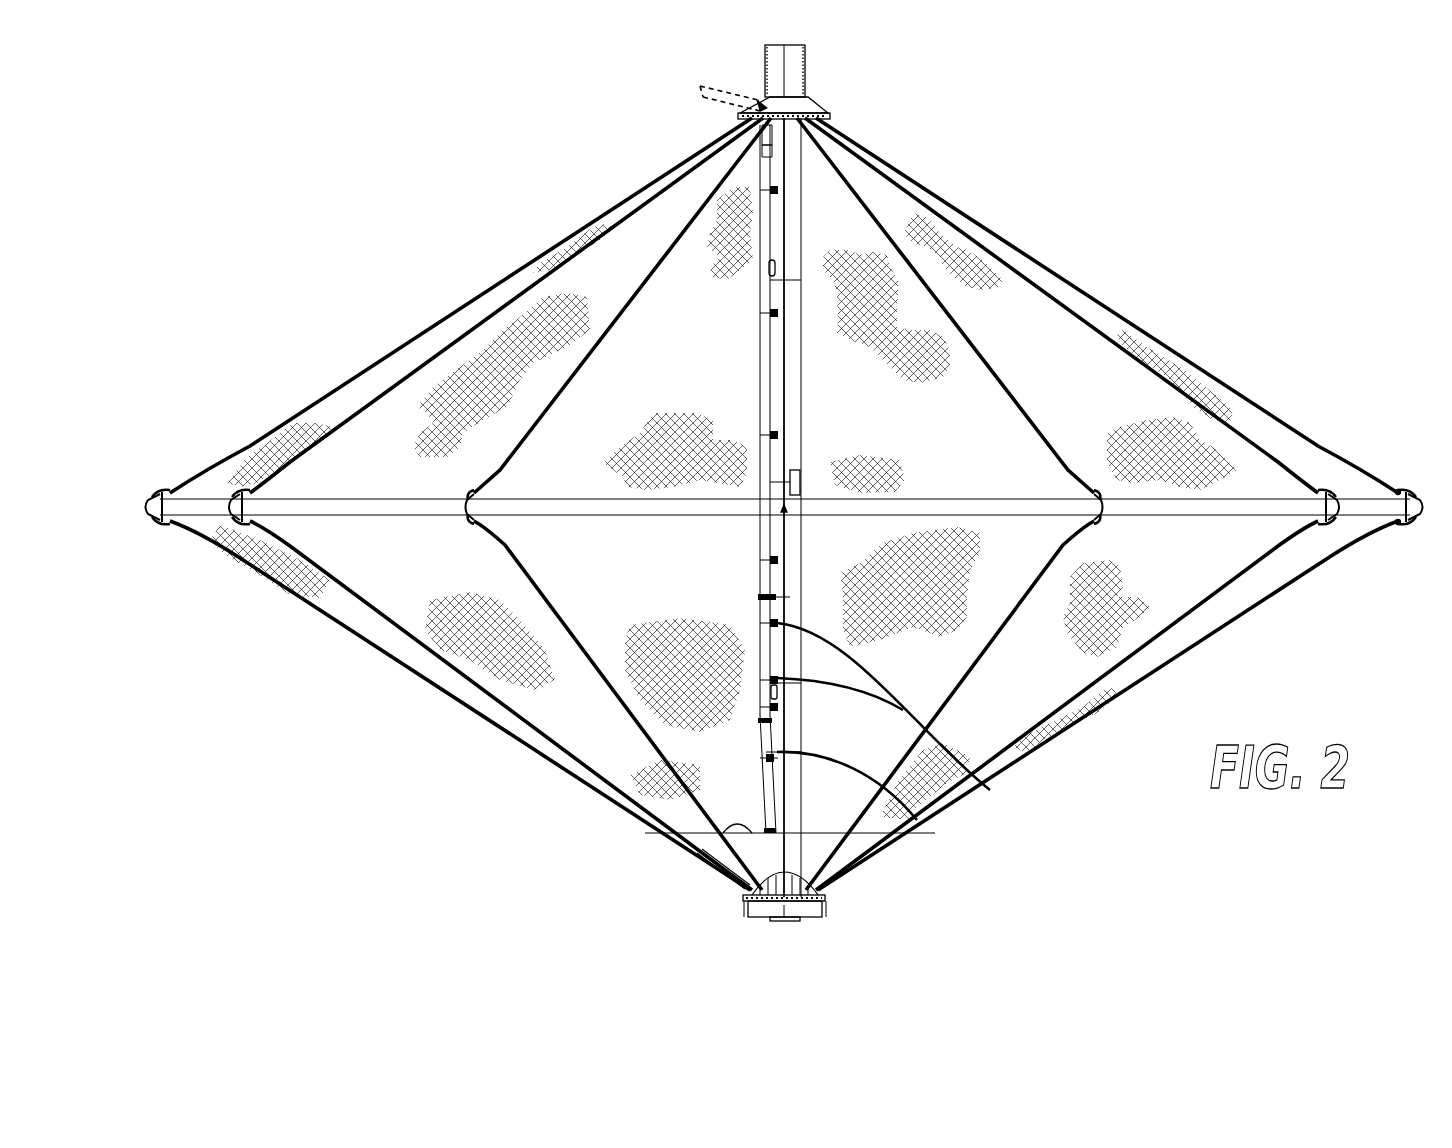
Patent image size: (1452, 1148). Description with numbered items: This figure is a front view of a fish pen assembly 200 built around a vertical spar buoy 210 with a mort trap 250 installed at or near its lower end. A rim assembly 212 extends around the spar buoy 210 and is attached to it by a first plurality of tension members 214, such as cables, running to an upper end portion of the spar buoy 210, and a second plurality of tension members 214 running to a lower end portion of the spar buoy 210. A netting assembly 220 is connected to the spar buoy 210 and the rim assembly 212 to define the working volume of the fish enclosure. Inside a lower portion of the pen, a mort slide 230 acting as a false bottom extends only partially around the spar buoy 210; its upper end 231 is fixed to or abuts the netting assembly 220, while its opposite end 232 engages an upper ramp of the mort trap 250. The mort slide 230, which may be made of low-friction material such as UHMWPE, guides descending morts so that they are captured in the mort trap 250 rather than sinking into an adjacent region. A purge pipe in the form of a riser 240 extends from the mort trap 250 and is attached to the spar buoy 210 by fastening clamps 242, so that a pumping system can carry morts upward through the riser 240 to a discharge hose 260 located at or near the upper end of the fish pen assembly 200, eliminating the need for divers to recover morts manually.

The fish pen assembly 200 is at (1240, 192).
The vertical spar buoy 210 is at (798, 70).
The rim assembly 212 is at (1362, 503).
The tension members 214 is at (1037, 286).
The netting assembly 220 is at (1187, 437).
The mort slide 230 is at (855, 848).
The upper end 231 is at (714, 833).
The opposite end 232 is at (745, 905).
The riser 240 is at (917, 820).
The fastening clamps 242 is at (990, 790).
The mort trap 250 is at (800, 912).
The discharge hose 260 is at (719, 85).